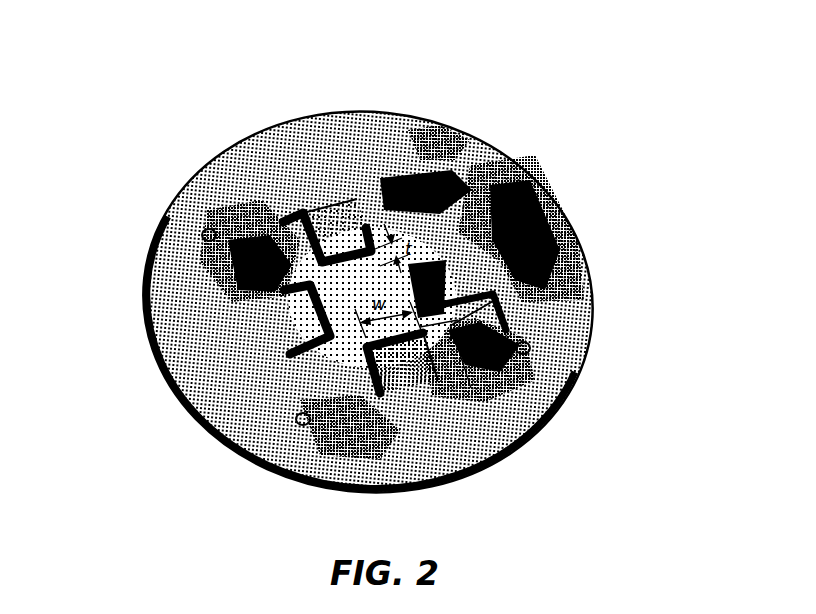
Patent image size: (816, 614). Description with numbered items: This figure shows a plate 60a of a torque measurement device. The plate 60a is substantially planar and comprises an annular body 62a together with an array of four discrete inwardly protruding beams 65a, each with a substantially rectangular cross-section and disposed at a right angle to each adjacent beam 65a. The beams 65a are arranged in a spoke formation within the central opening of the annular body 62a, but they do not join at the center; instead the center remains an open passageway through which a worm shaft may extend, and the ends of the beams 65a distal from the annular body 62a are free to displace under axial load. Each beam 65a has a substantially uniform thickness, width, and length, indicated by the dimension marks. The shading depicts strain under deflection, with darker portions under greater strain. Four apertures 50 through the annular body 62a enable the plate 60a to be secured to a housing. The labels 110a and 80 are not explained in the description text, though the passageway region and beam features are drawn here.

The plate 60a is at (619, 194).
The tab 110a is at (343, 237).
The opening 80 is at (455, 270).
The inwardly protruding beam 65a is at (360, 425).
The annular body 62a is at (228, 323).
The aperture 50 is at (547, 385).